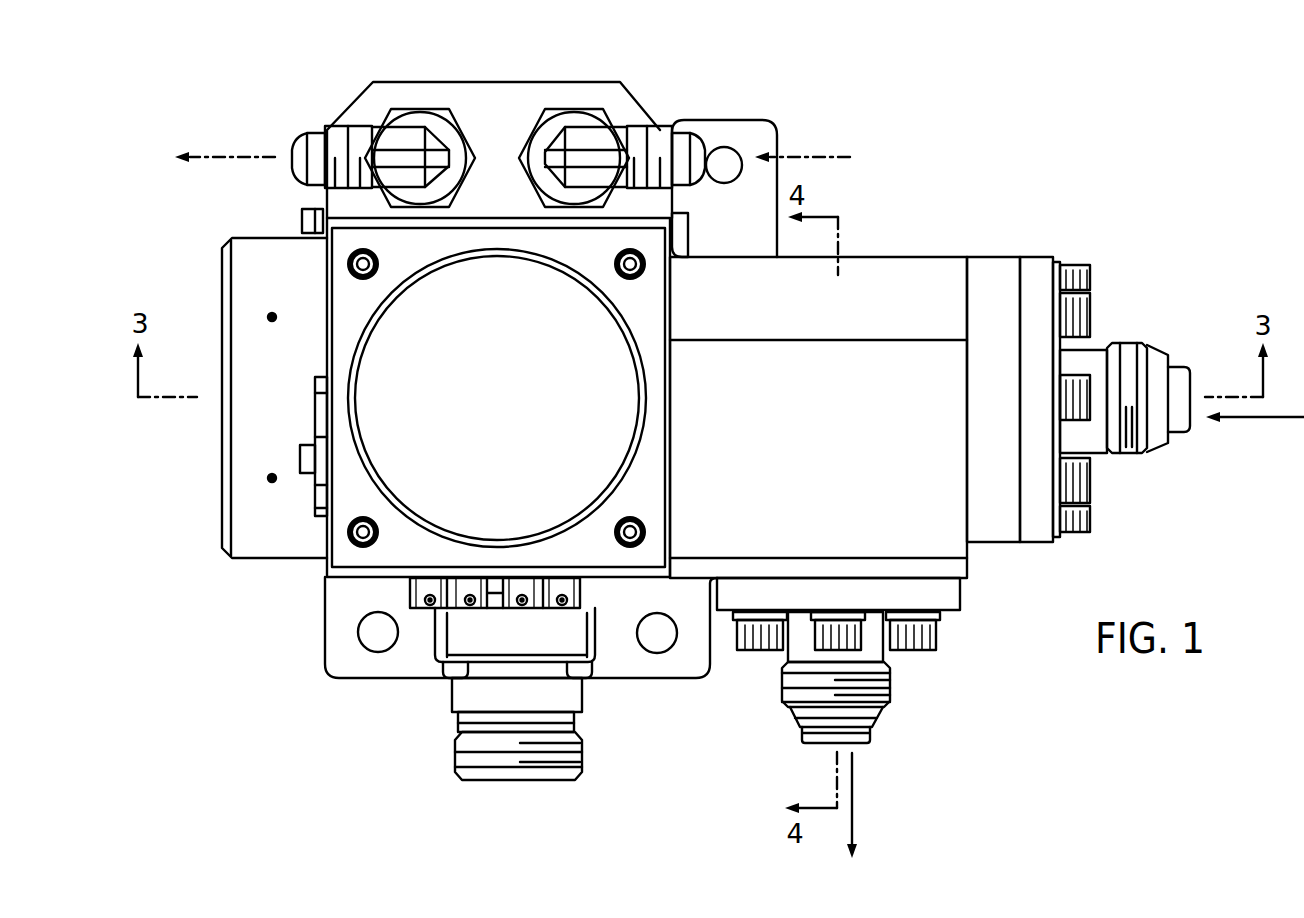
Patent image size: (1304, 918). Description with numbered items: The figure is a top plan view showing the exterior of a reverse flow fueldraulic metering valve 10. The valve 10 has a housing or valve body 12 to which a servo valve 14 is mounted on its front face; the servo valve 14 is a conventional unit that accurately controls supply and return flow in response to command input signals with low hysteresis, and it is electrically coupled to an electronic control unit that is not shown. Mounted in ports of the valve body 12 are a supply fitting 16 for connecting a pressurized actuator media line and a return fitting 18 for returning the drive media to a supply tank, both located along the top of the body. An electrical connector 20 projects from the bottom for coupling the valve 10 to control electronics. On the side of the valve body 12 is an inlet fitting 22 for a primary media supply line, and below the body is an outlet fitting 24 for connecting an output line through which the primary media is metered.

The reverse flow metering valve 10 is at (418, 92).
The valve body 12 is at (918, 257).
The servo valve 14 is at (607, 417).
The supply fitting 16 is at (660, 135).
The return fitting 18 is at (318, 141).
The electrical connector 20 is at (558, 782).
The inlet fitting 22 is at (1172, 368).
The outlet fitting 24 is at (877, 726).